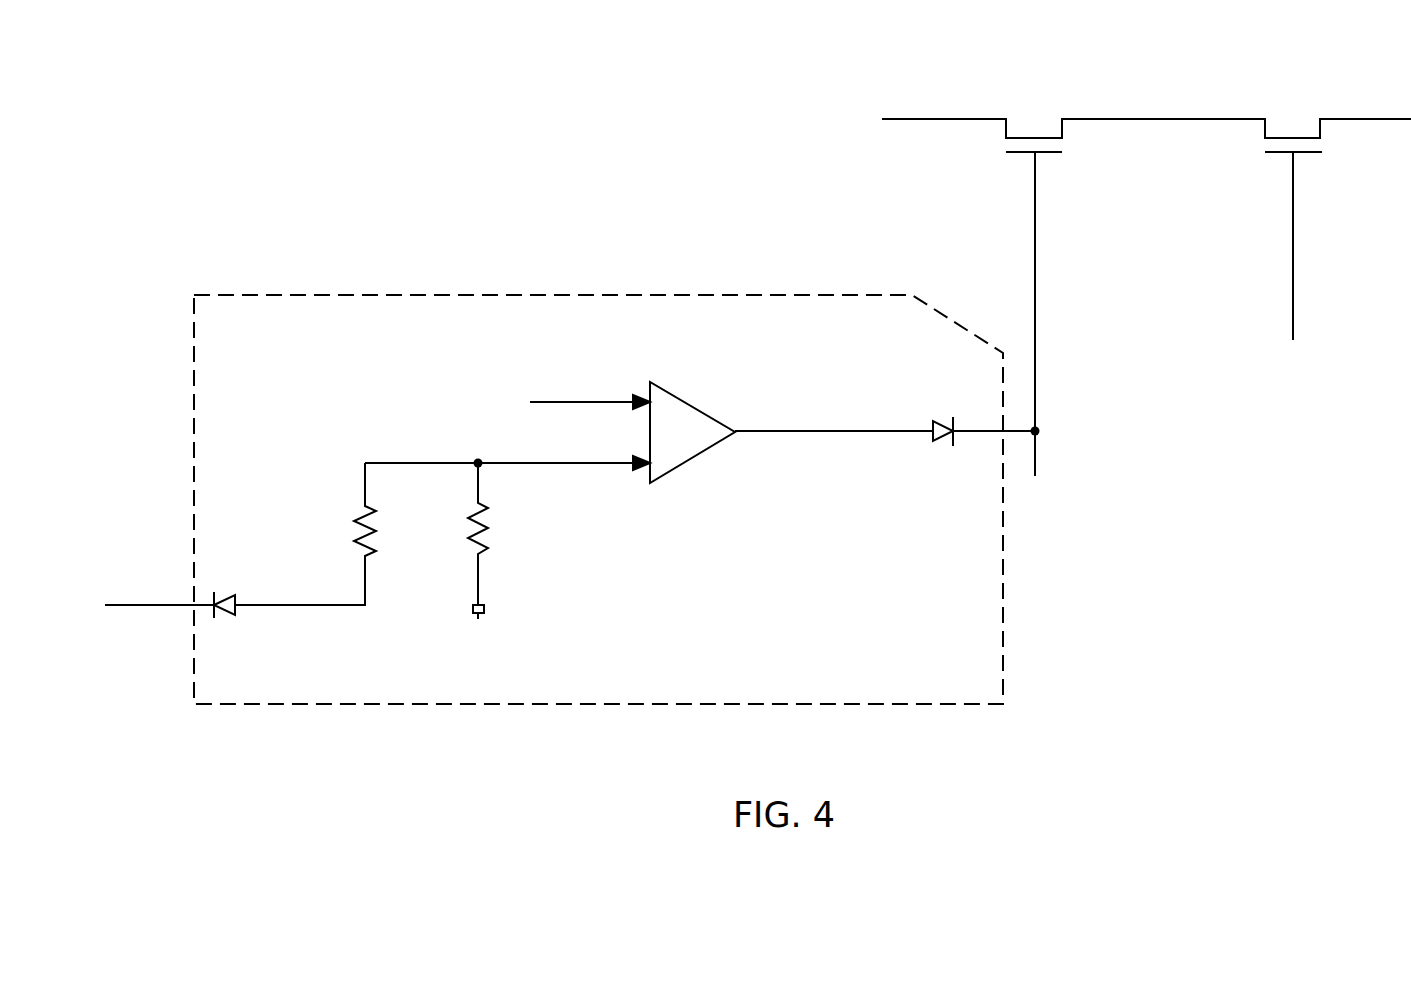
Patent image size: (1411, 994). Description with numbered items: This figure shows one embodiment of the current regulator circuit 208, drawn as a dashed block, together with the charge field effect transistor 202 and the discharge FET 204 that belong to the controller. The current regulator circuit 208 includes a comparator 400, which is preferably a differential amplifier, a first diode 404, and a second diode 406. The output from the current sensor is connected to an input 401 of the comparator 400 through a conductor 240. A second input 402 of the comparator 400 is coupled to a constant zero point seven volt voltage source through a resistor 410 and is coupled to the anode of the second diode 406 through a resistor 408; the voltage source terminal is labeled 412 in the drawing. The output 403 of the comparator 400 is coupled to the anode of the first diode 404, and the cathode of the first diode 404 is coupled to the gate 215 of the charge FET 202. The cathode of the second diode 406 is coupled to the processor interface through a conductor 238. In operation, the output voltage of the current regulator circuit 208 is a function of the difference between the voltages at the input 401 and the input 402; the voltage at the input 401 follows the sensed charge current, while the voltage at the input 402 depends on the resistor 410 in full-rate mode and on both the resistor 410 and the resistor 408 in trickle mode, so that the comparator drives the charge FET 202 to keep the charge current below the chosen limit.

The charge field effect transistor 202 is at (1008, 123).
The discharge FET 204 is at (1267, 123).
The current regulator circuit 208 is at (820, 705).
The gate 215 is at (1038, 427).
The conductor 238 is at (148, 603).
The conductor 240 is at (550, 400).
The comparator 400 is at (670, 387).
The input 401 is at (648, 393).
The input 402 is at (649, 474).
The output 403 is at (737, 436).
The first diode 404 is at (947, 422).
The second diode 406 is at (227, 614).
The resistor 408 is at (363, 503).
The resistor 410 is at (483, 508).
The reference voltage terminal 412 is at (478, 620).